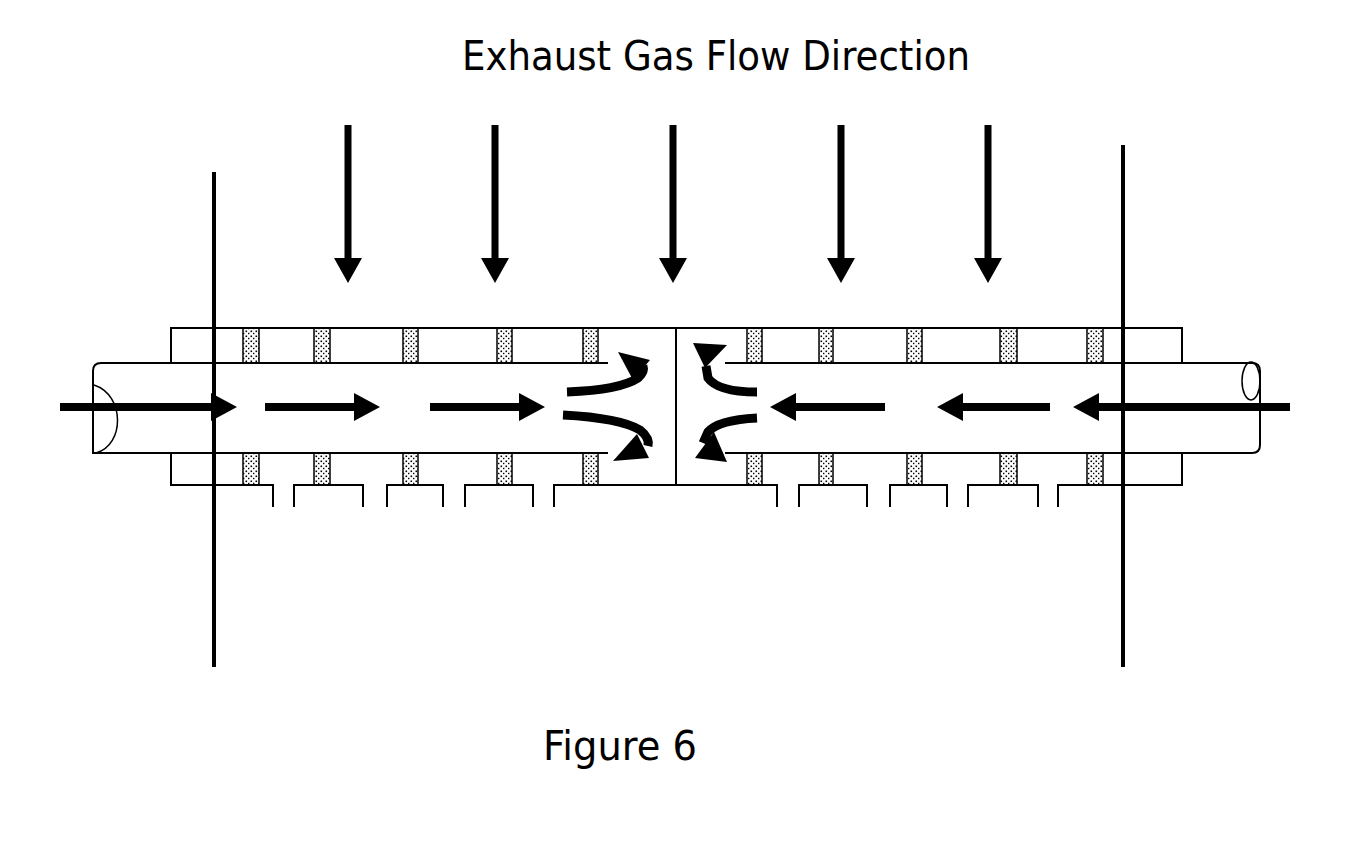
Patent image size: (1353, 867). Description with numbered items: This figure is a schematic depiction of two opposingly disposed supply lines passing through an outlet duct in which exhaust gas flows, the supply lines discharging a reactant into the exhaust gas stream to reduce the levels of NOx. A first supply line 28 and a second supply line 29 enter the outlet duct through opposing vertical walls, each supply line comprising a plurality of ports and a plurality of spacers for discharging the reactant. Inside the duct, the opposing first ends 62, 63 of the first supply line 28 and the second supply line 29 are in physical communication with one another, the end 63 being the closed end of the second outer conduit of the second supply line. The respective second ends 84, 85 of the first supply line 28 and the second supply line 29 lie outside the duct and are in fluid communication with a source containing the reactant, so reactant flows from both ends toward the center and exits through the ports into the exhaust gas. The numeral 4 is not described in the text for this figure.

The exhaust pipe 4 is at (1125, 236).
The first supply line 28 is at (1025, 292).
The second supply line 29 is at (316, 275).
The first end of the first supply line 62 is at (677, 450).
The first end of the second supply line 63 is at (673, 428).
The second end of the first supply line 84 is at (1248, 381).
The second end of the second supply line 85 is at (100, 385).